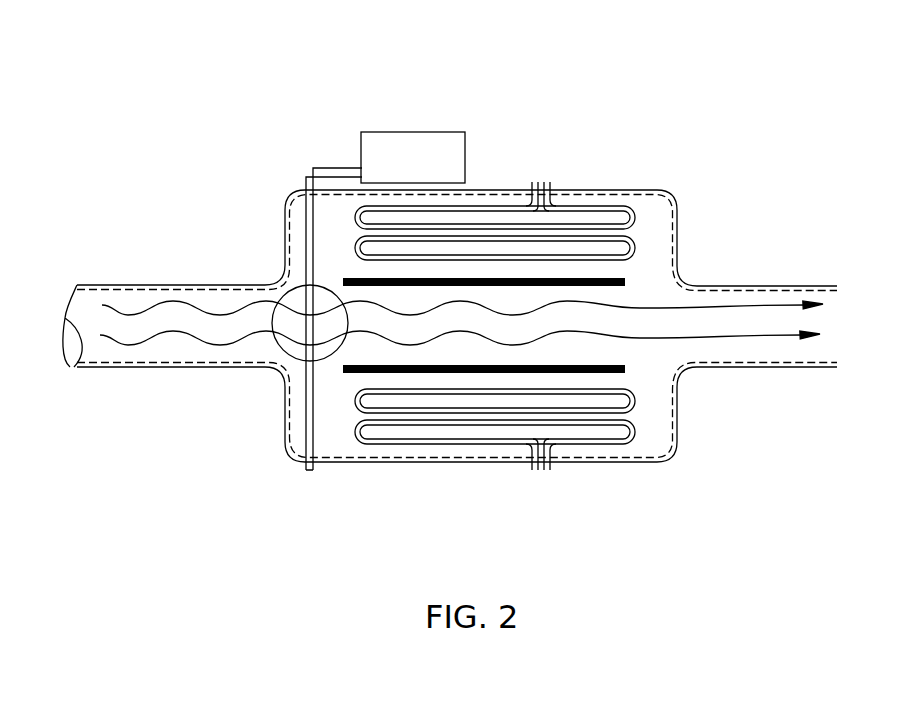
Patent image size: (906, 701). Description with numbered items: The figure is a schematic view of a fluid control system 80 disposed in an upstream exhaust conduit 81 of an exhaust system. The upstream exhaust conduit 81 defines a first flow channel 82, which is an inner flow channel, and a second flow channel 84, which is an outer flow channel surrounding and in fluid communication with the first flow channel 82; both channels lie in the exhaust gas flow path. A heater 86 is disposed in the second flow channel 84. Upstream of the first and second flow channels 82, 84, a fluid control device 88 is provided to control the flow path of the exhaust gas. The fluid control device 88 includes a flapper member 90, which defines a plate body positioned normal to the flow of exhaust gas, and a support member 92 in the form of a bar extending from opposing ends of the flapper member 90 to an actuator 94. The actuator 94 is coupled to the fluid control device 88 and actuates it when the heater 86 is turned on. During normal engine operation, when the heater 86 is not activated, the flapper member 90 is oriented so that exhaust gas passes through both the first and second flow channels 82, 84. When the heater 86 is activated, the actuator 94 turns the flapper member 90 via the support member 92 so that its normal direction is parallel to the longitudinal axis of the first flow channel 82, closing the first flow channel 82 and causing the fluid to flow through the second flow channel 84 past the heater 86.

The fluid control system 80 is at (613, 127).
The upstream exhaust conduit 81 is at (623, 186).
The first flow channel 82 is at (732, 342).
The second flow channel 84 is at (652, 243).
The heater 86 is at (492, 197).
The fluid control device 88 is at (288, 175).
The flapper member 90 is at (278, 352).
The support member 92 is at (305, 233).
The actuator 94 is at (407, 131).